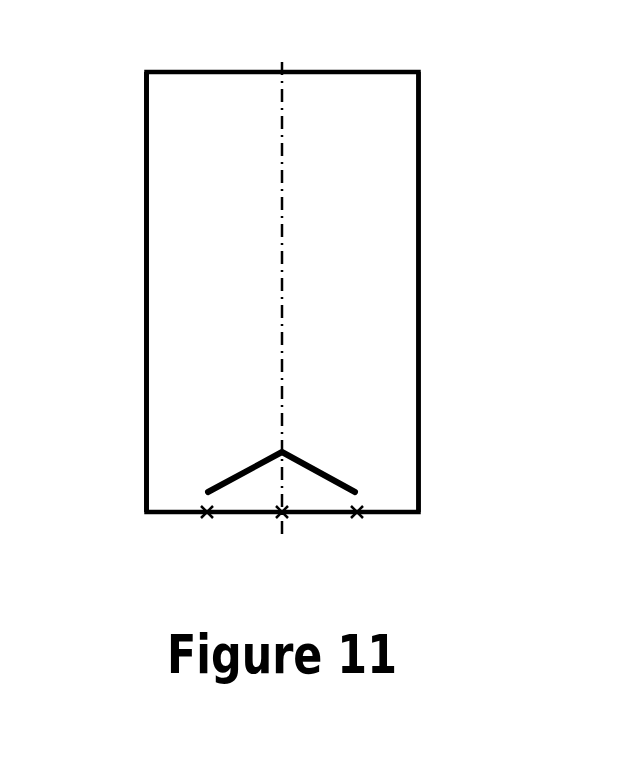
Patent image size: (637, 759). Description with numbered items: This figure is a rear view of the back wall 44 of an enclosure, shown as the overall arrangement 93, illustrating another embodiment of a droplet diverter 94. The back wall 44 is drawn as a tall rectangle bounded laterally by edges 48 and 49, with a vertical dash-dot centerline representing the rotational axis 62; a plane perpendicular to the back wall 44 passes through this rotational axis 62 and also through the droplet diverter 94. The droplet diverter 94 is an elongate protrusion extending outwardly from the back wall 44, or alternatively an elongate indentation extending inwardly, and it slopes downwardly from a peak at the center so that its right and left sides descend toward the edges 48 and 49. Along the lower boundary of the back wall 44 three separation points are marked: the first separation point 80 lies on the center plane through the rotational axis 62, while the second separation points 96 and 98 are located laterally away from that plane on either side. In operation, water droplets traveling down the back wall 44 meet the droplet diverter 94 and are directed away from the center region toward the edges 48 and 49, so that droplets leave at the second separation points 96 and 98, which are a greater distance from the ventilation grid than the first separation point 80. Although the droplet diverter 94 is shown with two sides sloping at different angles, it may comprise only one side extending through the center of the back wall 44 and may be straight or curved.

The apparatus / display arrangement 93 is at (126, 106).
The back wall 44 is at (343, 92).
The edge 48 is at (146, 272).
The edge 49 is at (418, 252).
The rotational axis 62 is at (282, 323).
The droplet diverter 94 is at (313, 462).
The second separation point 96 is at (207, 520).
The first separation point 80 is at (282, 520).
The second separation point 98 is at (357, 520).